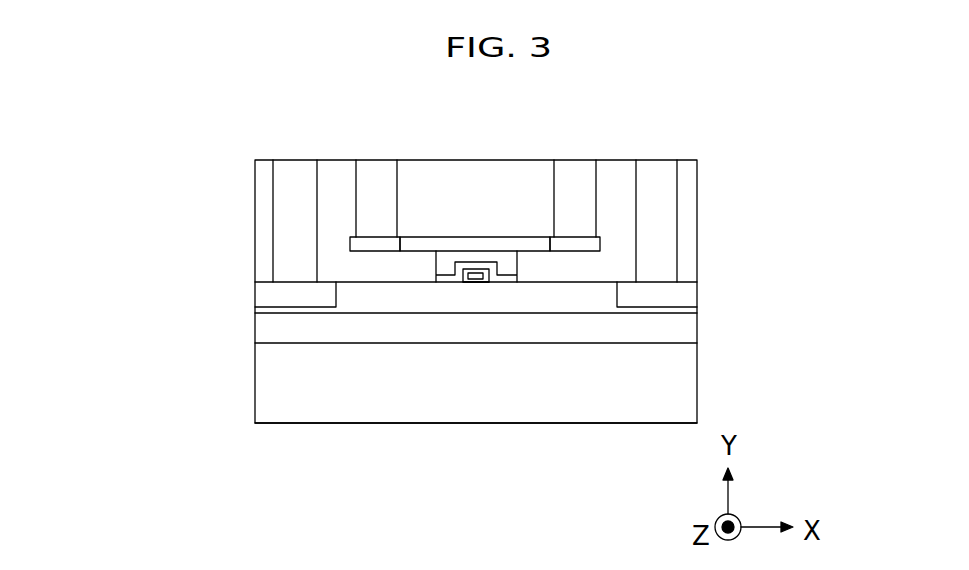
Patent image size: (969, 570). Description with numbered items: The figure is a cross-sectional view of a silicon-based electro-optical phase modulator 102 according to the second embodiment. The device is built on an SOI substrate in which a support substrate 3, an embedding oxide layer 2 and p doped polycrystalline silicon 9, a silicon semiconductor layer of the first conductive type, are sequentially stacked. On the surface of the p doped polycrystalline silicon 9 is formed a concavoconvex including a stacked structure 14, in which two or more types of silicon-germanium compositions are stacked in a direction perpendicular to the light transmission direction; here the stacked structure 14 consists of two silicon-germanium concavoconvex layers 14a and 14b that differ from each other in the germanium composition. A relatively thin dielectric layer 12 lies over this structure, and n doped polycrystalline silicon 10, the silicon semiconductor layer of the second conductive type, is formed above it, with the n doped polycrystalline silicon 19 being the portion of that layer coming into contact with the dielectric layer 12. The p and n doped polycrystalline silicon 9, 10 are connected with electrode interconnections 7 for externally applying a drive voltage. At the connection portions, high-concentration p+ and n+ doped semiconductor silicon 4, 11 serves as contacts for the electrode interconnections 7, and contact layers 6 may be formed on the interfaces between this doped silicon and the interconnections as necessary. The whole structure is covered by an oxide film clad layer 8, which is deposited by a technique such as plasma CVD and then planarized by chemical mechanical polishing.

The electro-optical phase modulator 102 is at (727, 122).
The n doped polycrystalline silicon 19 is at (475, 194).
The oxide film clad layer 8 is at (333, 177).
The electrode interconnections 7 is at (572, 170).
The n+ doped semiconductor silicon 11 is at (357, 245).
The contact layers 6 is at (582, 233).
The n doped polycrystalline silicon 10 is at (415, 248).
The p doped polycrystalline silicon 9 is at (593, 305).
The p+ doped semiconductor silicon 4 is at (675, 293).
The embedding oxide layer 2 is at (675, 327).
The support substrate 3 is at (537, 403).
The dielectric layer 12 is at (467, 280).
The stacked structure 14 is at (437, 398).
The Si1-xGex concavoconvex layer 14a is at (475, 280).
The Si1-xGex concavoconvex layer 14b is at (481, 282).